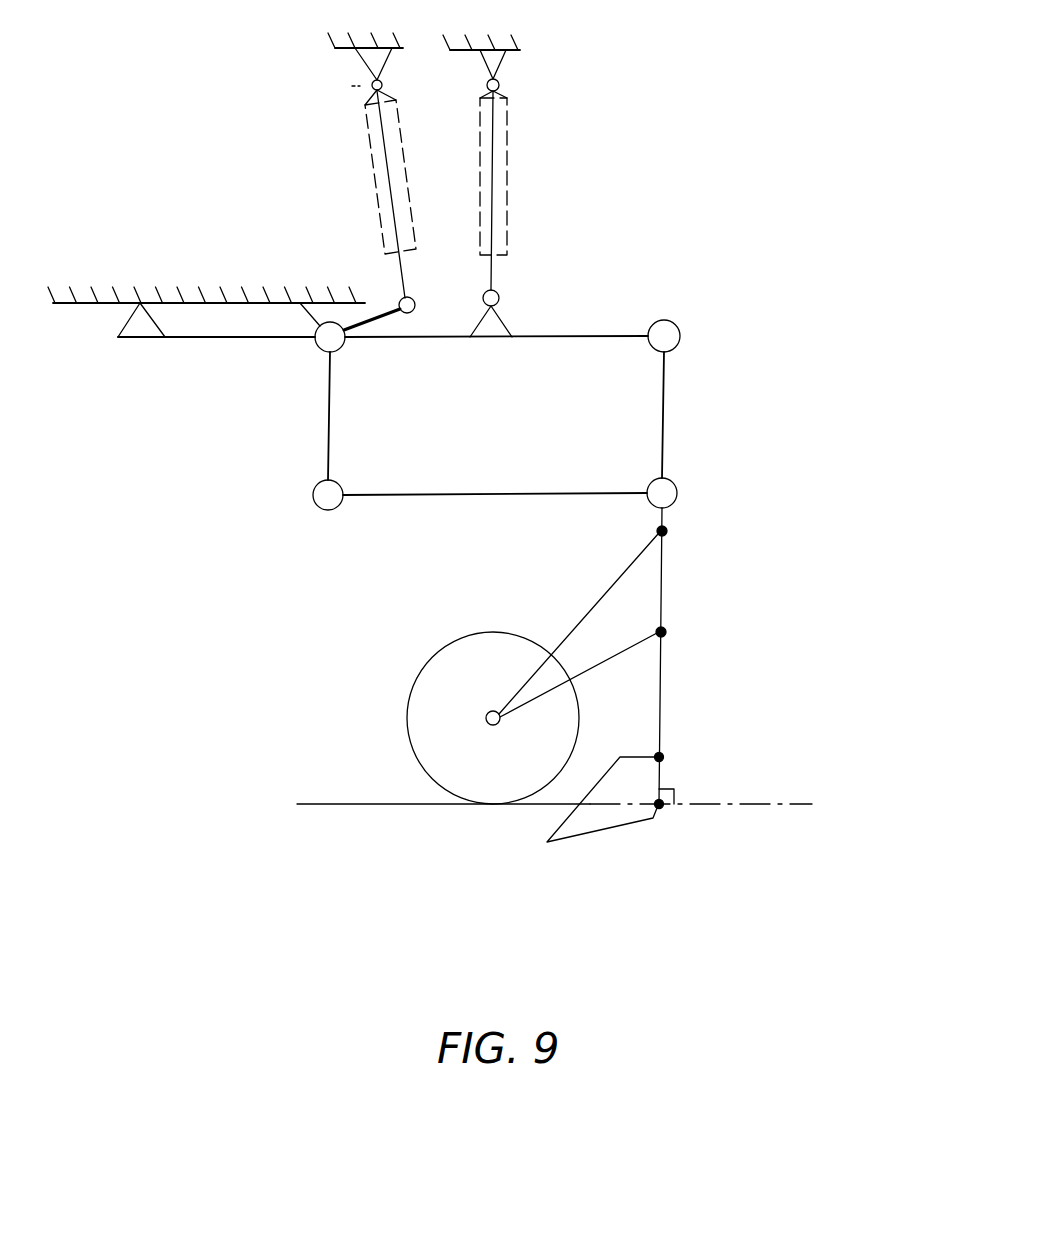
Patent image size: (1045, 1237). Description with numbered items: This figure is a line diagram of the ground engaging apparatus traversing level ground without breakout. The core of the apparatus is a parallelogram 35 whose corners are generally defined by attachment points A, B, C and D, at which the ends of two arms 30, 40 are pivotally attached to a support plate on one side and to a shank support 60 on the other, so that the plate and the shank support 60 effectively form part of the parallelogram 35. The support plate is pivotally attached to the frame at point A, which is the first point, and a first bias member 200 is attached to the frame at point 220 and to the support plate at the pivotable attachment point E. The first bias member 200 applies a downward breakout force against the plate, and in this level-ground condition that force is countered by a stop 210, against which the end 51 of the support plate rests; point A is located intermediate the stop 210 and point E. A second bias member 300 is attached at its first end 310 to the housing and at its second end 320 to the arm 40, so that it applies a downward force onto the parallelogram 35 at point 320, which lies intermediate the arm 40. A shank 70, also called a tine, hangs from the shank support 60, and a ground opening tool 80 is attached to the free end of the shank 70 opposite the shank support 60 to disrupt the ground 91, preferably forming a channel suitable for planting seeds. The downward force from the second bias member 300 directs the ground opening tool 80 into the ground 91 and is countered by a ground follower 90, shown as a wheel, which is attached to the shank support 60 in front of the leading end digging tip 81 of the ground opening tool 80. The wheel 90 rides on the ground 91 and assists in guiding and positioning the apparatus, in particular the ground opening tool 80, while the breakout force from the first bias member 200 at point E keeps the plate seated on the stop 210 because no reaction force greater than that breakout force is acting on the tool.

The attachment point of first bias member to frame 220 is at (372, 90).
The first bias member 200 is at (385, 205).
The stop 210 is at (136, 303).
The end of support plate 51 is at (140, 327).
The pivotable attachment point E is at (398, 297).
The attachment point A is at (318, 350).
The attachment point B is at (679, 321).
The attachment point C is at (316, 509).
The attachment point D is at (680, 485).
The parallelogram 35 is at (508, 421).
The arm 40 is at (590, 337).
The arm 30 is at (540, 500).
The shank support 60 is at (805, 270).
The second end of second bias member 320 is at (498, 302).
The first end of second bias member 310 is at (498, 90).
The second bias member 300 is at (500, 218).
The shank 70 is at (662, 668).
The ground follower 90 is at (478, 761).
The ground 91 is at (404, 810).
The leading end digging tip 81 is at (563, 833).
The ground opening tool 80 is at (632, 814).